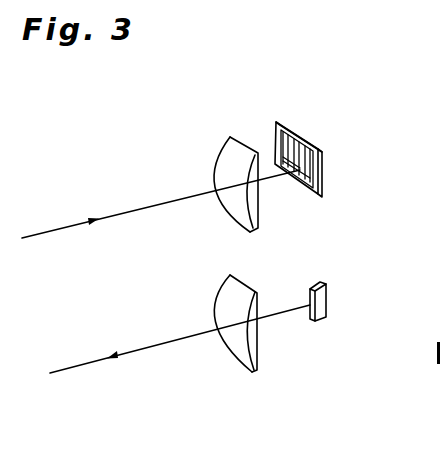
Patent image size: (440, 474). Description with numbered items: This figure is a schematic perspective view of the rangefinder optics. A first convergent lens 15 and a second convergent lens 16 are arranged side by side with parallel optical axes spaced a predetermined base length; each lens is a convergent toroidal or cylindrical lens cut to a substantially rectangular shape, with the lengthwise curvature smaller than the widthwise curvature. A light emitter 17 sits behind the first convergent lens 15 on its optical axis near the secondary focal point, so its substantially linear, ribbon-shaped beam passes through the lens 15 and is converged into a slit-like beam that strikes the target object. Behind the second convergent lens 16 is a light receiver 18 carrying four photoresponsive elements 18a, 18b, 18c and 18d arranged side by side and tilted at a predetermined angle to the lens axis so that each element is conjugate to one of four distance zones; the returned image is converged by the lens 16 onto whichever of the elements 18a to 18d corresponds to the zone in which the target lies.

The first convergent lens 15 is at (233, 368).
The second convergent lens 16 is at (223, 217).
The light emitter 17 is at (320, 320).
The light receiver 18 is at (323, 149).
The photoresponsive element 18a is at (312, 185).
The photoresponsive element 18b is at (293, 180).
The photoresponsive element 18c is at (292, 138).
The photoresponsive element 18d is at (275, 138).